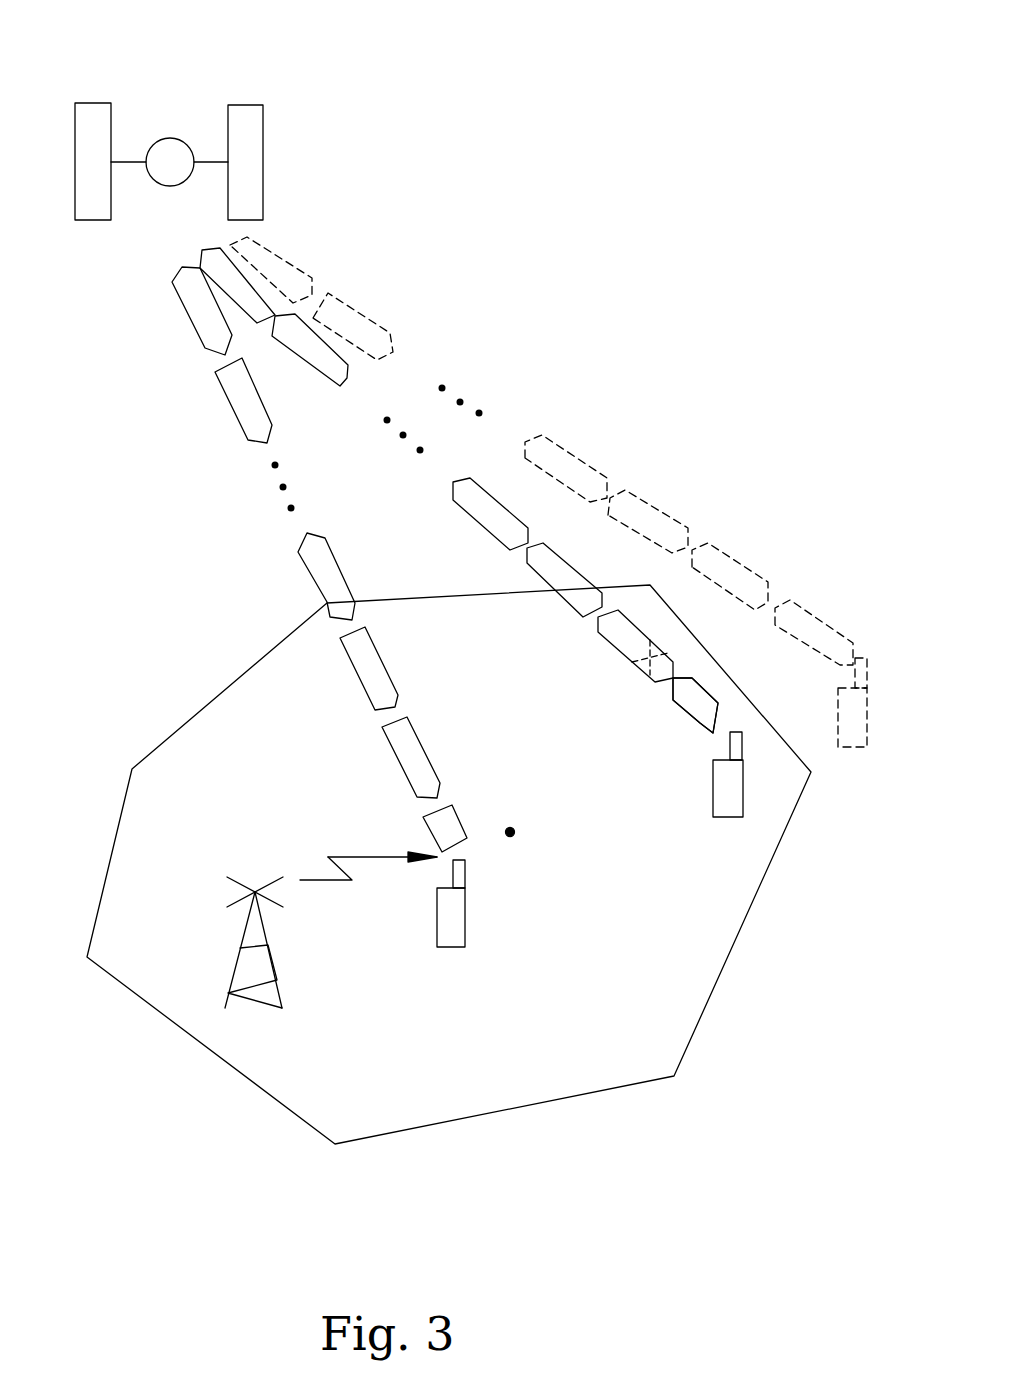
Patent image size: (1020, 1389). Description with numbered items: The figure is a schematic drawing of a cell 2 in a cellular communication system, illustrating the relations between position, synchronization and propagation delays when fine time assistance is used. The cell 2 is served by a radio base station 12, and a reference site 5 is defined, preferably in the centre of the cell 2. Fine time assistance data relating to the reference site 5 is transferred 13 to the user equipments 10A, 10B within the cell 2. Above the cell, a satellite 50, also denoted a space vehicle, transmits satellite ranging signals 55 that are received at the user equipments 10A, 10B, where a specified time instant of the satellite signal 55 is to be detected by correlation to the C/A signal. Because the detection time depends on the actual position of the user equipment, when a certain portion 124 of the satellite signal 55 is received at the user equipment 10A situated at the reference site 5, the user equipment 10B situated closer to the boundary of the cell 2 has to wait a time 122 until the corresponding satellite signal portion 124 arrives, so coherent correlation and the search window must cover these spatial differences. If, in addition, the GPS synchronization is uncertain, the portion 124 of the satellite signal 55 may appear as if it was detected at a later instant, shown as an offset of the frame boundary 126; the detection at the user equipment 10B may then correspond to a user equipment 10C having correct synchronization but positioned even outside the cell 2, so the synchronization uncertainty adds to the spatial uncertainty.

The satellite 50 is at (90, 103).
The satellite ranging signal 55 is at (357, 310).
The cell 2 is at (215, 698).
The portion of the satellite signal 124 is at (455, 822).
The time 122 is at (700, 723).
The frame boundary offset 126 is at (643, 673).
The reference site 5 is at (522, 828).
The transfer of fine time assistance data 13 is at (328, 857).
The radio base station 12 is at (282, 1008).
The user equipment 10A is at (465, 947).
The user equipment 10B is at (725, 818).
The user equipment 10C is at (850, 747).